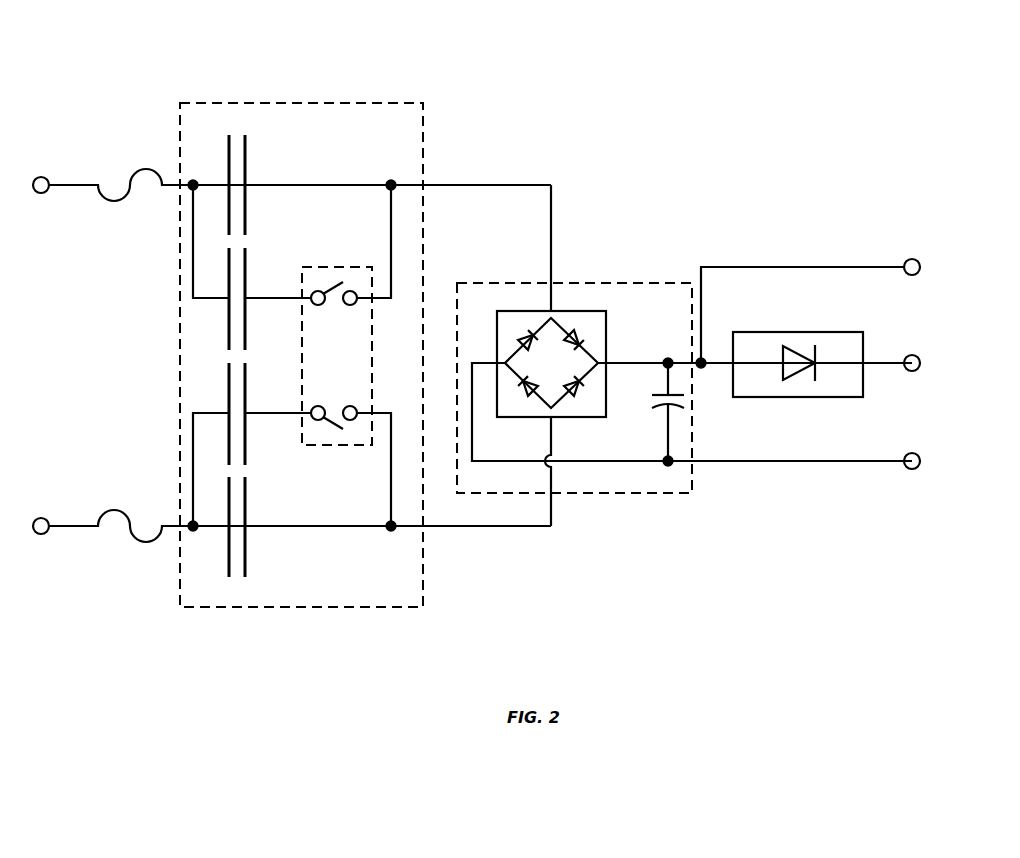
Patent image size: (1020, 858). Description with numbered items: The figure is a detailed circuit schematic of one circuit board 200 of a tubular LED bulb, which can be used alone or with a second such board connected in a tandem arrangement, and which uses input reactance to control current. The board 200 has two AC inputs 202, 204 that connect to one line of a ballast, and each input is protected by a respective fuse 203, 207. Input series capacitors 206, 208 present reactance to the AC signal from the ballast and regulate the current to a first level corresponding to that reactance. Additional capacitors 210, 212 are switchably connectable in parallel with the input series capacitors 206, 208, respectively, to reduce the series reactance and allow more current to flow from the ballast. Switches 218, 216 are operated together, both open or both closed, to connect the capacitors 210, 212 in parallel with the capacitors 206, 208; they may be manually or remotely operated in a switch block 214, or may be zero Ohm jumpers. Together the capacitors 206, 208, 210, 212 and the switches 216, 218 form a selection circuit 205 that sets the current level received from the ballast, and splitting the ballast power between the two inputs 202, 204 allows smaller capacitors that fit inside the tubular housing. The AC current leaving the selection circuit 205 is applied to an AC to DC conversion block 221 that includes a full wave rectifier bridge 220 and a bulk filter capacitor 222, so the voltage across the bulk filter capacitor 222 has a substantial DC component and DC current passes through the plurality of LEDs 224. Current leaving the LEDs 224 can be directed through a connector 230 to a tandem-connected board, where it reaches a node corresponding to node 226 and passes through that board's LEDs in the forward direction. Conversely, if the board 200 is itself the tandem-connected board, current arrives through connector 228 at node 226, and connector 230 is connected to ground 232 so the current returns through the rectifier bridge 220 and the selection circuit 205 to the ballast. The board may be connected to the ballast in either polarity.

The circuit board 200 is at (348, 34).
The AC input 202 is at (43, 177).
The fuse 203 is at (114, 207).
The AC input 204 is at (41, 534).
The selection circuit 205 is at (222, 103).
The input series capacitor 206 is at (246, 160).
The fuse 207 is at (114, 510).
The input series capacitor 208 is at (246, 565).
The additional capacitor 210 is at (229, 328).
The additional capacitor 212 is at (229, 389).
The switch block 214 is at (318, 267).
The switch 216 is at (342, 429).
The switch 218 is at (334, 283).
The full wave rectifier bridge 220 is at (567, 311).
The AC to DC conversion block 221 is at (595, 494).
The bulk filter capacitor 222 is at (660, 405).
The LEDs 224 is at (787, 332).
The node 226 is at (703, 368).
The connector 228 is at (826, 267).
The connector 230 is at (883, 363).
The ground 232 is at (862, 461).